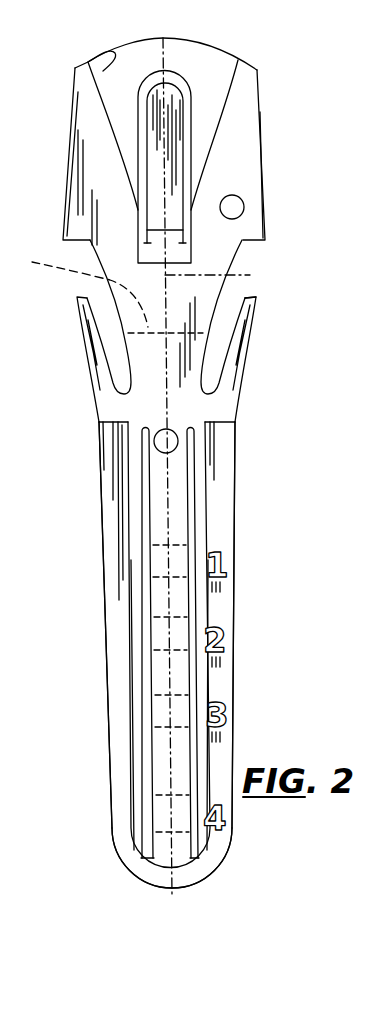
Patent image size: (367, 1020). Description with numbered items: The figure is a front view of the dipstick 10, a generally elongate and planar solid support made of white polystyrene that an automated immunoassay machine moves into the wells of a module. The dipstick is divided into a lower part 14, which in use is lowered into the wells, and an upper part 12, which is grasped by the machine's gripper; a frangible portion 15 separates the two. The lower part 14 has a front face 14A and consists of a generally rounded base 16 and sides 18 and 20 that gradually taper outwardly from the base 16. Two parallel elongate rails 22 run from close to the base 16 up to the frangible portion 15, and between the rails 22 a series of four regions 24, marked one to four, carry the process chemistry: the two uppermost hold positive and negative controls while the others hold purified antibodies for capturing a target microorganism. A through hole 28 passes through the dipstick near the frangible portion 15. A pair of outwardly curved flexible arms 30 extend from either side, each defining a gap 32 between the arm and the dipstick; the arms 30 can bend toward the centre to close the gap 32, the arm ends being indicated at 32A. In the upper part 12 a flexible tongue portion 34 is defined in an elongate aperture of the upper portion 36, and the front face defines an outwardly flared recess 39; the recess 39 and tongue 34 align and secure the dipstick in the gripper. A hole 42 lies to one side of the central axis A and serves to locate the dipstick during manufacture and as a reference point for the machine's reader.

The dipstick 10 is at (272, 123).
The upper part 12 is at (68, 148).
The lower part 14 is at (122, 765).
The front face 14A is at (110, 490).
The frangible portion 15 is at (103, 291).
The base 16 is at (137, 870).
The side 18 is at (235, 682).
The side 20 is at (110, 716).
The rails 22 is at (195, 517).
The regions 24 is at (152, 710).
The through hole 28 is at (158, 443).
The flexible arms 30 is at (97, 342).
The gap 32 is at (108, 322).
The arm tip 32A is at (254, 296).
The flexible tongue portion 34 is at (170, 177).
The upper portion 36 is at (140, 113).
The flared recess 39 is at (113, 52).
The hole 42 is at (244, 205).
The central axis A is at (250, 275).